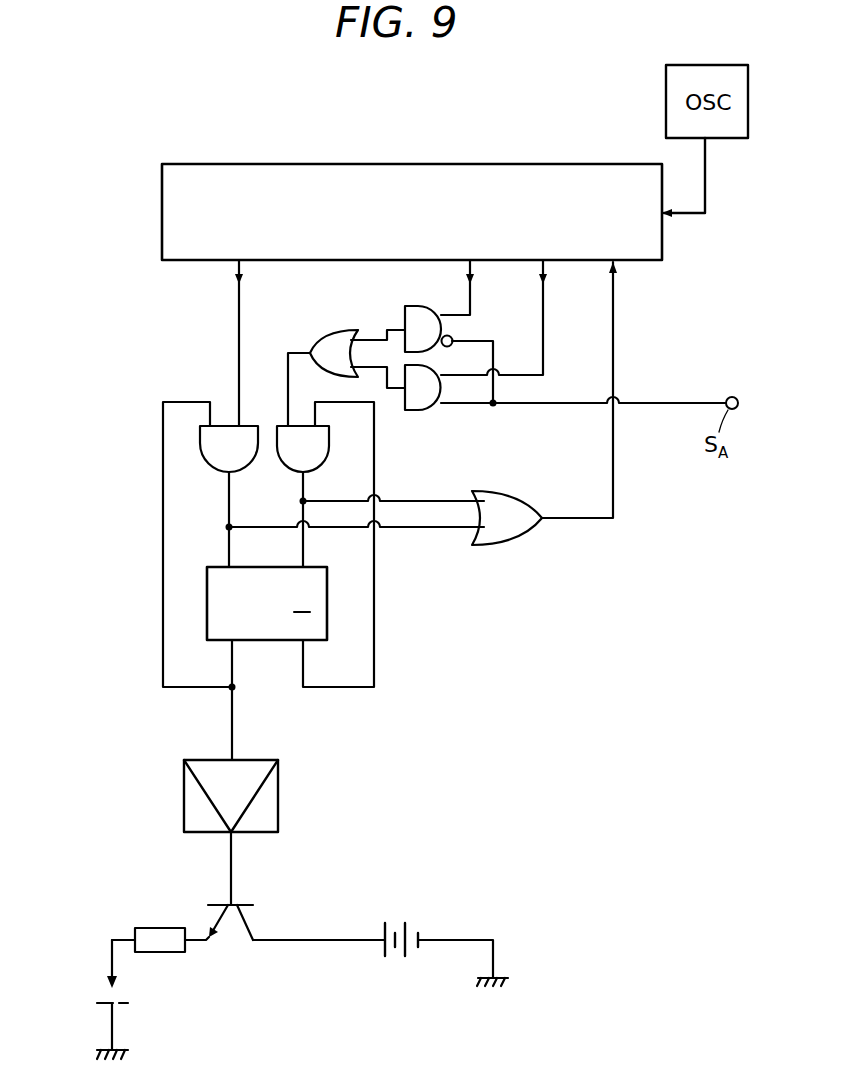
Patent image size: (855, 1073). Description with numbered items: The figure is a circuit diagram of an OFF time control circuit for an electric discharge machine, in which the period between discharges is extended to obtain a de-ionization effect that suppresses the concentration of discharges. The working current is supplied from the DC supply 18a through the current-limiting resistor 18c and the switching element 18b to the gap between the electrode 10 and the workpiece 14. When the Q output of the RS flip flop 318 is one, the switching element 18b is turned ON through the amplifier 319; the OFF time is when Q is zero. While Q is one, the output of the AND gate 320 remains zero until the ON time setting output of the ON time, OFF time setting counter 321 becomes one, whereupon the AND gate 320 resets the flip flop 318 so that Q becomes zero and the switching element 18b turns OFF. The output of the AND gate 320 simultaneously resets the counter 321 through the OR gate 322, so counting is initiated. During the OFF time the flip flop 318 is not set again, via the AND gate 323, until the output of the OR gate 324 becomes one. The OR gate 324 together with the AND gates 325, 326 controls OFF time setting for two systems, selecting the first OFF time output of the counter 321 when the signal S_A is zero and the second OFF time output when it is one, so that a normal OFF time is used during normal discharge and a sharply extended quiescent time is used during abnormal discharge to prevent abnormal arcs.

The electrode 10 is at (105, 980).
The workpiece 14 is at (130, 1003).
The DC supply 18a is at (398, 958).
The switching element 18b is at (231, 933).
The current-limiting resistor 18c is at (155, 928).
The RS flip flop 318 is at (327, 632).
The amplifier 319 is at (278, 800).
The AND gate 320 is at (250, 460).
The ON time, OFF time setting counter 321 is at (409, 164).
The OR gate 322 is at (513, 502).
The AND gate 323 is at (328, 442).
The OR gate 324 is at (325, 335).
The AND gate 325 is at (427, 410).
The AND gate 326 is at (405, 312).